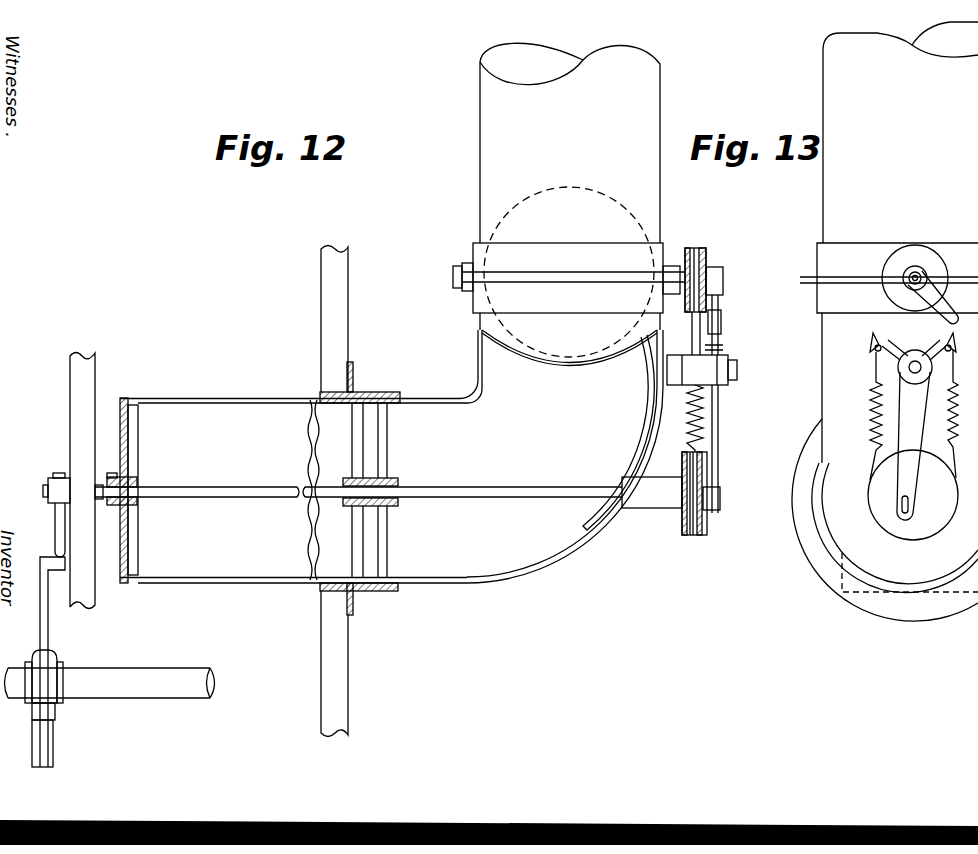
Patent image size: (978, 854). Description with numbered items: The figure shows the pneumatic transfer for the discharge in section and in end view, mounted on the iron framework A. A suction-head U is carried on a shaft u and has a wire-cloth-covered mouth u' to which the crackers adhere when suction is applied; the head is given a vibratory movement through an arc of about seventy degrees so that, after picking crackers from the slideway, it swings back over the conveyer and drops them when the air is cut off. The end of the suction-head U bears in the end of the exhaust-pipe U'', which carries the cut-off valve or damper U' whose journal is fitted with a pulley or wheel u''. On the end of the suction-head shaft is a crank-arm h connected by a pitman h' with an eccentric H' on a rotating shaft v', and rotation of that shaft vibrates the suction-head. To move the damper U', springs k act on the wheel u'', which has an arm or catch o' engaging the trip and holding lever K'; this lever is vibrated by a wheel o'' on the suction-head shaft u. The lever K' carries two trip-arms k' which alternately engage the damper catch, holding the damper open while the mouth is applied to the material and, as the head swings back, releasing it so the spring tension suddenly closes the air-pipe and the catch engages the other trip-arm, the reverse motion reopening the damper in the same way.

In FIG. 12, the framework A is at (235, 491).
In FIG. 12, the suction-head U is at (301, 456).
In FIG. 12, the shaft u is at (388, 490).
In FIG. 12, the wire-cloth-covered mouth u' is at (293, 590).
In FIG. 13, the wire-cloth-covered mouth u' is at (895, 548).
In FIG. 12, the cut-off valve or damper U' is at (569, 358).
In FIG. 12, the exhaust-pipe U'' is at (569, 322).
In FIG. 13, the exhaust-pipe U'' is at (885, 321).
In FIG. 12, the pulley u'' is at (711, 274).
In FIG. 13, the pulley u'' is at (927, 278).
In FIG. 12, the trip-arms k' is at (716, 325).
In FIG. 13, the trip-arms k' is at (915, 342).
In FIG. 12, the springs k is at (689, 418).
In FIG. 13, the springs k is at (914, 415).
In FIG. 12, the trip and holding lever K' is at (705, 434).
In FIG. 13, the trip and holding lever K' is at (921, 435).
In FIG. 12, the wheel o'' is at (709, 494).
In FIG. 13, the wheel o'' is at (913, 495).
In FIG. 13, the arm or catch o' is at (942, 297).
In FIG. 12, the crank-arm h is at (51, 515).
In FIG. 12, the pitman h' is at (54, 603).
In FIG. 12, the shaft v' is at (110, 674).
In FIG. 12, the eccentric H' is at (53, 708).